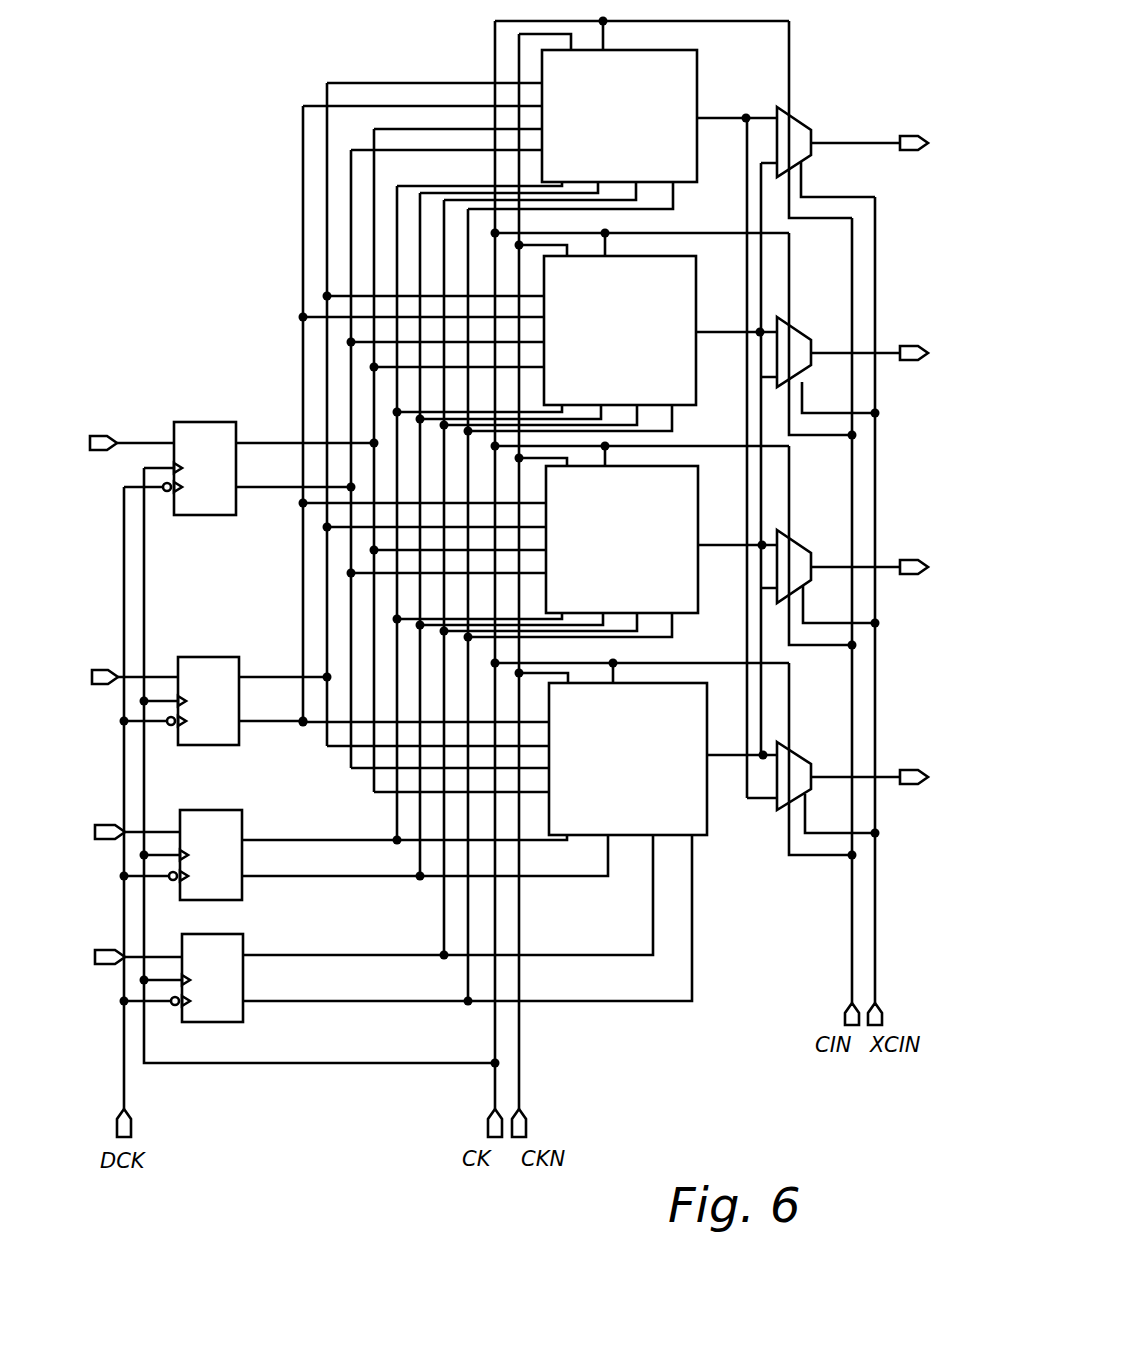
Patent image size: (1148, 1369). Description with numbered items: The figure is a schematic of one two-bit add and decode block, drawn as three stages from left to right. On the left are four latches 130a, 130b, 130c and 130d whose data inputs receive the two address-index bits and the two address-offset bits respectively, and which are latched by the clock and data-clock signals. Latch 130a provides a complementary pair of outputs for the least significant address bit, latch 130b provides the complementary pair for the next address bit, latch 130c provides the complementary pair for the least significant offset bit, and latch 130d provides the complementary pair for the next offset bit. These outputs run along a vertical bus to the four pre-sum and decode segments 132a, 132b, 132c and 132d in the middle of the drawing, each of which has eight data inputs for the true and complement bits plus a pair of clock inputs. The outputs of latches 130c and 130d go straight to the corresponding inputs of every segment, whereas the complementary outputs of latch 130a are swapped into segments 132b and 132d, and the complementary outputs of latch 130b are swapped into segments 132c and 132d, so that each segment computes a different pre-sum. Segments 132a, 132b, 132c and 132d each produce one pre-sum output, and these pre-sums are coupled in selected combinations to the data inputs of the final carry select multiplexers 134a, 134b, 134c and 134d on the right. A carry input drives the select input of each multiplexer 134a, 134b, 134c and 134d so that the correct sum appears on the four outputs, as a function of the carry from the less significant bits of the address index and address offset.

The latch 130a is at (186, 422).
The latch 130b is at (190, 657).
The latch 130c is at (192, 810).
The latch 130d is at (200, 1022).
The pre-sum and decode segment 132a is at (700, 835).
The pre-sum and decode segment 132b is at (688, 613).
The pre-sum and decode segment 132c is at (686, 405).
The pre-sum and decode segment 132d is at (697, 62).
The final carry select multiplexer 134a is at (790, 763).
The final carry select multiplexer 134b is at (790, 551).
The final carry select multiplexer 134c is at (790, 338).
The final carry select multiplexer 134d is at (790, 128).